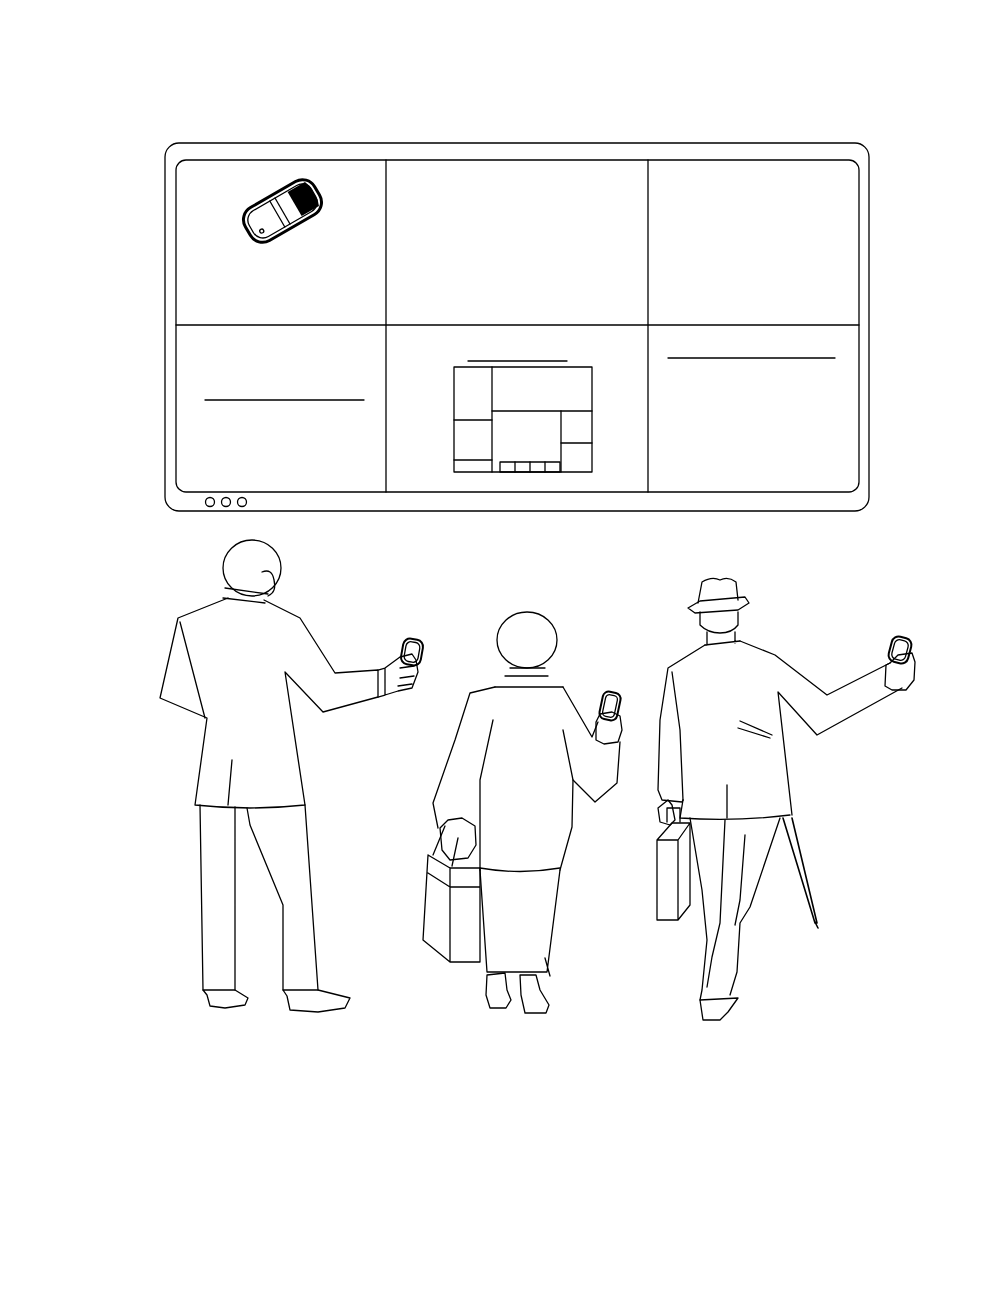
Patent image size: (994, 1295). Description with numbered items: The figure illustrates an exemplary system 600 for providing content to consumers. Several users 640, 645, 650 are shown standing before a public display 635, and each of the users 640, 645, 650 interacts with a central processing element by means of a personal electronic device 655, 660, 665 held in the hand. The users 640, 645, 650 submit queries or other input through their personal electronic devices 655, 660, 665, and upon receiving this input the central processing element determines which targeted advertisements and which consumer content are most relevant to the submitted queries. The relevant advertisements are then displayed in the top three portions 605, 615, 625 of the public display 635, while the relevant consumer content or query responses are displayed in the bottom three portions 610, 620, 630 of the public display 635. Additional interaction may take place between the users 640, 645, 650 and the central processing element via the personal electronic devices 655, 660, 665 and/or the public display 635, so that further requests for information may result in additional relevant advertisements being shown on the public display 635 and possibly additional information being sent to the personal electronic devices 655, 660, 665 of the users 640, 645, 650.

The system 600 is at (118, 76).
The top portion of public display 605 is at (292, 174).
The bottom portion of public display 610 is at (205, 479).
The top portion of public display 615 is at (512, 198).
The bottom portion of public display 620 is at (553, 481).
The top portion of public display 625 is at (674, 200).
The bottom portion of public display 630 is at (835, 473).
The public display 635 is at (187, 152).
The user 640 is at (152, 631).
The user 645 is at (447, 1008).
The user 650 is at (810, 786).
The personal electronic device 655 is at (438, 628).
The personal electronic device 660 is at (612, 675).
The personal electronic device 665 is at (875, 648).